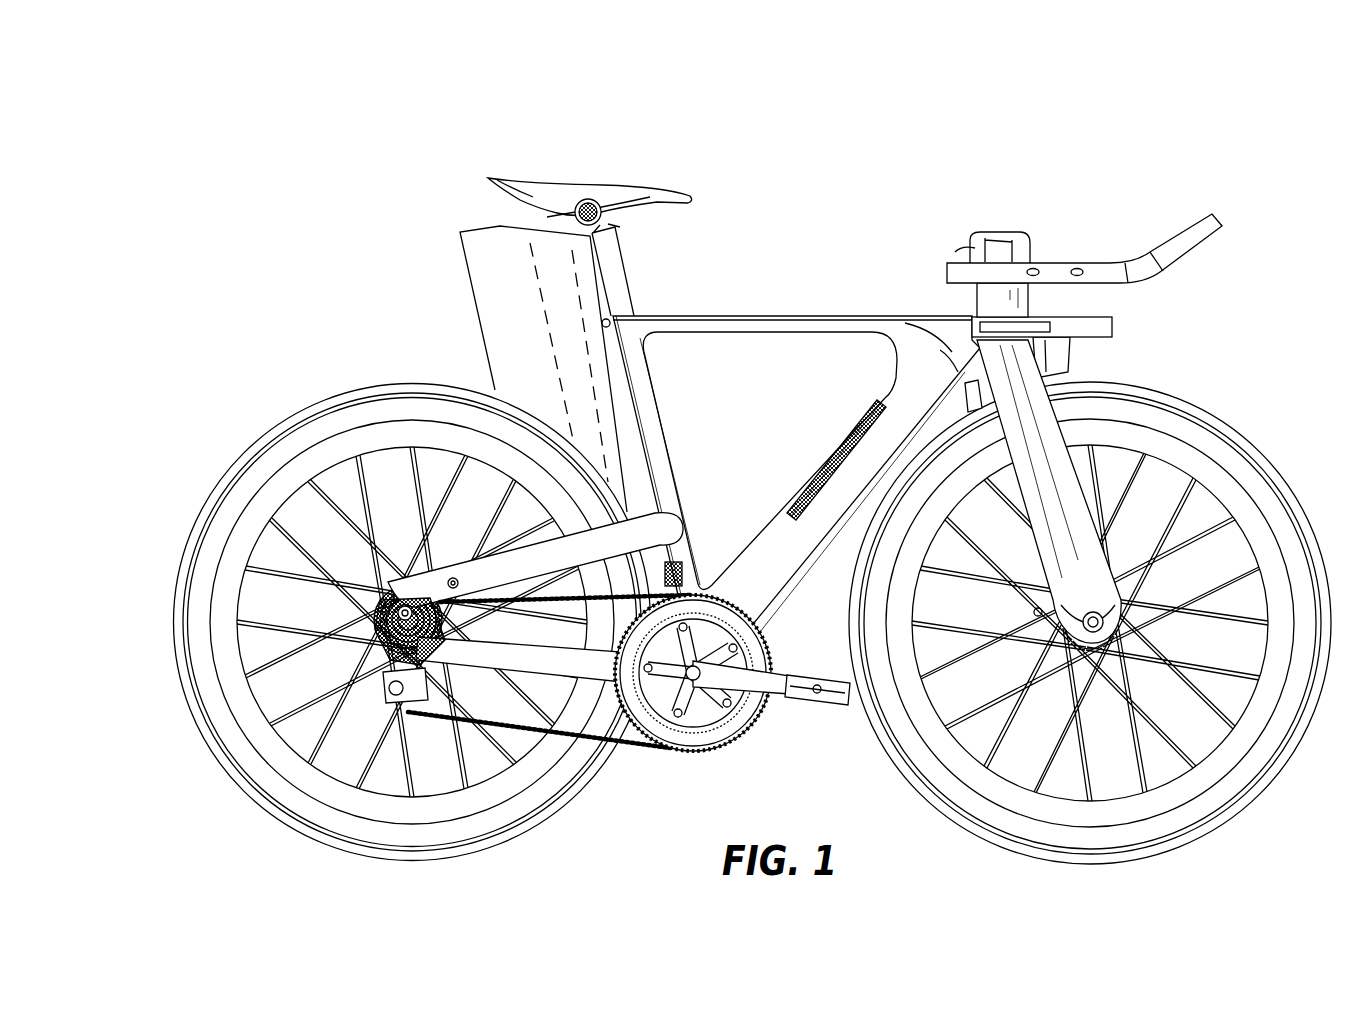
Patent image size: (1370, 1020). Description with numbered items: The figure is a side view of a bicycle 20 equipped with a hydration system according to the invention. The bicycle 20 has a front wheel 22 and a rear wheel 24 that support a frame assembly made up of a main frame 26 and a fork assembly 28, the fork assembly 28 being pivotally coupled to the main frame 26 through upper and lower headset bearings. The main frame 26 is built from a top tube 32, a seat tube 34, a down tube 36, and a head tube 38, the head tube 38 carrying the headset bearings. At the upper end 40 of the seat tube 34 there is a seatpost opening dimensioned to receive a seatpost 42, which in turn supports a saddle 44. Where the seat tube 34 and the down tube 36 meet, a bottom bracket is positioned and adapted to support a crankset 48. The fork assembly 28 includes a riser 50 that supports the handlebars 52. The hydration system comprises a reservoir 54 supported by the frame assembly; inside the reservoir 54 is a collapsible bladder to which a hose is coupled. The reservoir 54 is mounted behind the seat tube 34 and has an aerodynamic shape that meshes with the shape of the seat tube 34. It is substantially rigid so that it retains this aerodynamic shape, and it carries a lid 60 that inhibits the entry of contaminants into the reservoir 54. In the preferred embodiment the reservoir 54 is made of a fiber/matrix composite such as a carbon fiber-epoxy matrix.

The bicycle 20 is at (246, 124).
The front wheel 22 is at (1240, 437).
The rear wheel 24 is at (246, 448).
The main frame 26 is at (822, 289).
The fork assembly 28 is at (1130, 355).
The top tube 32 is at (718, 327).
The seat tube 34 is at (657, 456).
The down tube 36 is at (797, 530).
The head tube 38 is at (950, 345).
The upper end of the seat tube 40 is at (650, 318).
The seatpost 42 is at (622, 272).
The saddle 44 is at (605, 186).
The crankset 48 is at (745, 714).
The riser 50 is at (975, 312).
The handlebars 52 is at (1187, 242).
The reservoir 54 is at (532, 358).
The lid 60 is at (490, 228).